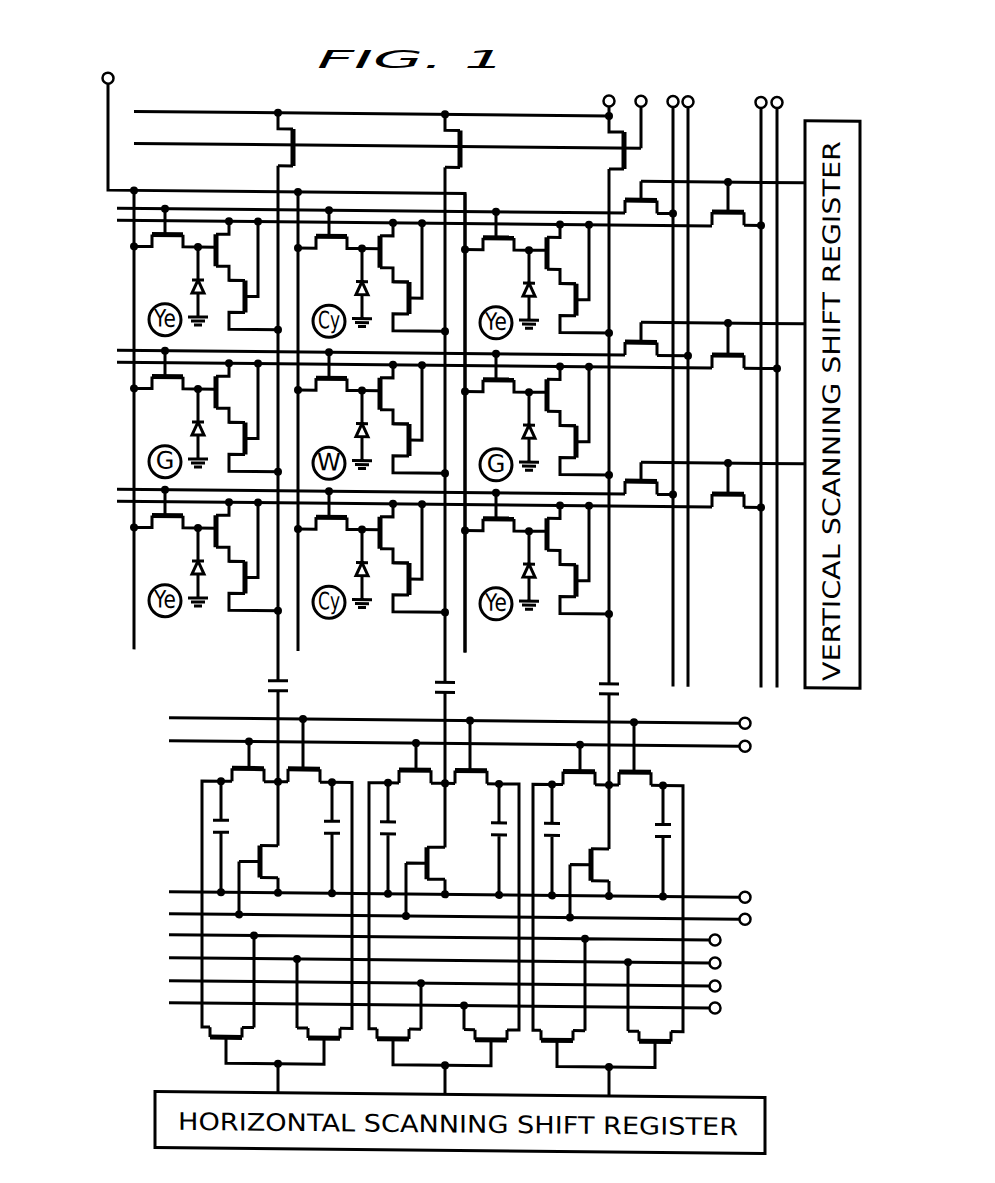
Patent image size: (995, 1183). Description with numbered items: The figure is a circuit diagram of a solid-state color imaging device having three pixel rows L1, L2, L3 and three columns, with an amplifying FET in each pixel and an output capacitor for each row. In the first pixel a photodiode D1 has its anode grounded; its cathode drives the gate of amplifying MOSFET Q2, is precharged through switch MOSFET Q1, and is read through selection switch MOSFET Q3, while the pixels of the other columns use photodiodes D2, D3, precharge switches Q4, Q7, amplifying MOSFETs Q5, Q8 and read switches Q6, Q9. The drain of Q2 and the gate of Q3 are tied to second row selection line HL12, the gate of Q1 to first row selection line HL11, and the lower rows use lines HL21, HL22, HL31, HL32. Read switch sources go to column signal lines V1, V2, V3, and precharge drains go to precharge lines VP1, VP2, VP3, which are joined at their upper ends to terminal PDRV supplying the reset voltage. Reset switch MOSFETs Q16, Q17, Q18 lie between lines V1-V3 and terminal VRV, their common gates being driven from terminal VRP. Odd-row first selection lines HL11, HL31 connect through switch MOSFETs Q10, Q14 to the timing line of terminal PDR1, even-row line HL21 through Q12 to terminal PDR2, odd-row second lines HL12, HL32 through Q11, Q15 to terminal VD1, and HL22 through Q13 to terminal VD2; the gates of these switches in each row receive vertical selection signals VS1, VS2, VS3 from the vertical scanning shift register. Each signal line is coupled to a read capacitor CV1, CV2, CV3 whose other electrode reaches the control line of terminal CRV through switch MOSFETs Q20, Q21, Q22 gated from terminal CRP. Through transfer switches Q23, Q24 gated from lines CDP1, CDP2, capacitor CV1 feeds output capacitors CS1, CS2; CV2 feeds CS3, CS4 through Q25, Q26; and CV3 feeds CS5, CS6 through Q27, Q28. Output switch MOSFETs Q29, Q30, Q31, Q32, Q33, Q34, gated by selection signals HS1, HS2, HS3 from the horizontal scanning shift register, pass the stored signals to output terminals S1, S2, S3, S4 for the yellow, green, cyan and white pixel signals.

The precharge voltage terminal PDRV is at (271, 346).
The reset voltage terminal VRV is at (378, 76).
The reset signal terminal VRP is at (394, 90).
The odd-row reset timing terminal PDR1 is at (673, 356).
The even-row reset timing terminal PDR2 is at (688, 357).
The odd-row read timing terminal VD1 is at (761, 366).
The even-row read timing terminal VD2 is at (777, 366).
The precharge switch MOSFET Q1 is at (166, 242).
The amplifying MOSFET Q2 is at (224, 249).
The selection switch MOSFET Q3 is at (244, 273).
The precharge switch MOSFET Q4 is at (330, 244).
The amplifying MOSFET Q5 is at (388, 251).
The read switch MOSFET Q6 is at (408, 275).
The precharge switch MOSFET Q7 is at (497, 246).
The amplifying transistor of pixel cell Q8 is at (555, 252).
The read switch MOSFET Q9 is at (575, 276).
The photodiode D1 is at (185, 286).
The photodiode D2 is at (349, 287).
The photodiode D3 is at (516, 289).
The row switch MOSFET Q10 is at (647, 220).
The row switch MOSFET Q11 is at (735, 221).
The row switch MOSFET Q12 is at (655, 363).
The row switch MOSFET Q13 is at (743, 364).
The row switch MOSFET Q14 is at (647, 502).
The row switch MOSFET Q15 is at (735, 503).
The reset switch MOSFET Q16 is at (261, 146).
The reset switch MOSFET Q17 is at (427, 148).
The reset switch MOSFET Q18 is at (593, 150).
The first row selection line HL11 is at (330, 204).
The second row selection line HL12 is at (373, 234).
The first row selection line HL21 is at (330, 346).
The second row selection line HL22 is at (373, 376).
The first row selection line HL31 is at (330, 485).
The second row selection line HL32 is at (373, 515).
The pixel row 1 L1 is at (107, 292).
The pixel row 2 L2 is at (107, 433).
The pixel row 3 L3 is at (107, 573).
The vertical selection signal VS1 is at (723, 169).
The vertical selection signal VS2 is at (723, 310).
The vertical selection signal VS3 is at (723, 450).
The precharge line VP1 is at (157, 431).
The precharge line VP2 is at (321, 433).
The precharge line VP3 is at (487, 435).
The column signal line V1 is at (259, 528).
The column signal line V2 is at (426, 530).
The column signal line V3 is at (592, 532).
The read capacitor CV1 is at (250, 696).
The read capacitor CV2 is at (416, 698).
The read capacitor CV3 is at (582, 699).
The charge transfer pulse line 1 CDP1 is at (497, 745).
The charge transfer pulse line 2 CDP2 is at (497, 723).
The capacitor reset voltage terminal CRV is at (485, 898).
The capacitor reset timing terminal CRP is at (484, 920).
The capacitor reset switch MOSFET Q20 is at (277, 882).
The capacitor reset switch MOSFET Q21 is at (444, 884).
The capacitor reset switch MOSFET Q22 is at (609, 886).
The transfer switch MOSFET Q23 is at (249, 779).
The transfer switch MOSFET Q24 is at (305, 768).
The transfer switch MOSFET Q25 is at (416, 781).
The transfer switch MOSFET Q26 is at (472, 769).
The charge transfer transistor Q27 is at (580, 782).
The charge transfer transistor Q28 is at (636, 771).
The output capacitor CS1 is at (241, 839).
The output capacitor CS2 is at (311, 840).
The output capacitor CS3 is at (408, 841).
The output capacitor CS4 is at (478, 841).
The output capacitor CS5 is at (573, 842).
The output capacitor CS6 is at (643, 843).
The output switch MOSFET Q29 is at (241, 1034).
The output switch MOSFET Q30 is at (312, 1035).
The output switch MOSFET Q31 is at (408, 1036).
The output switch MOSFET Q32 is at (478, 1036).
The output switch MOSFET Q33 is at (572, 1037).
The output switch MOSFET Q34 is at (642, 1038).
The horizontal selection signal HS1 is at (275, 1062).
The horizontal selection signal HS2 is at (442, 1063).
The horizontal selection signal HS3 is at (606, 1065).
The yellow output terminal S1 is at (499, 978).
The green output terminal S2 is at (490, 990).
The cyan output terminal S3 is at (499, 1001).
The white output terminal S4 is at (492, 1012).